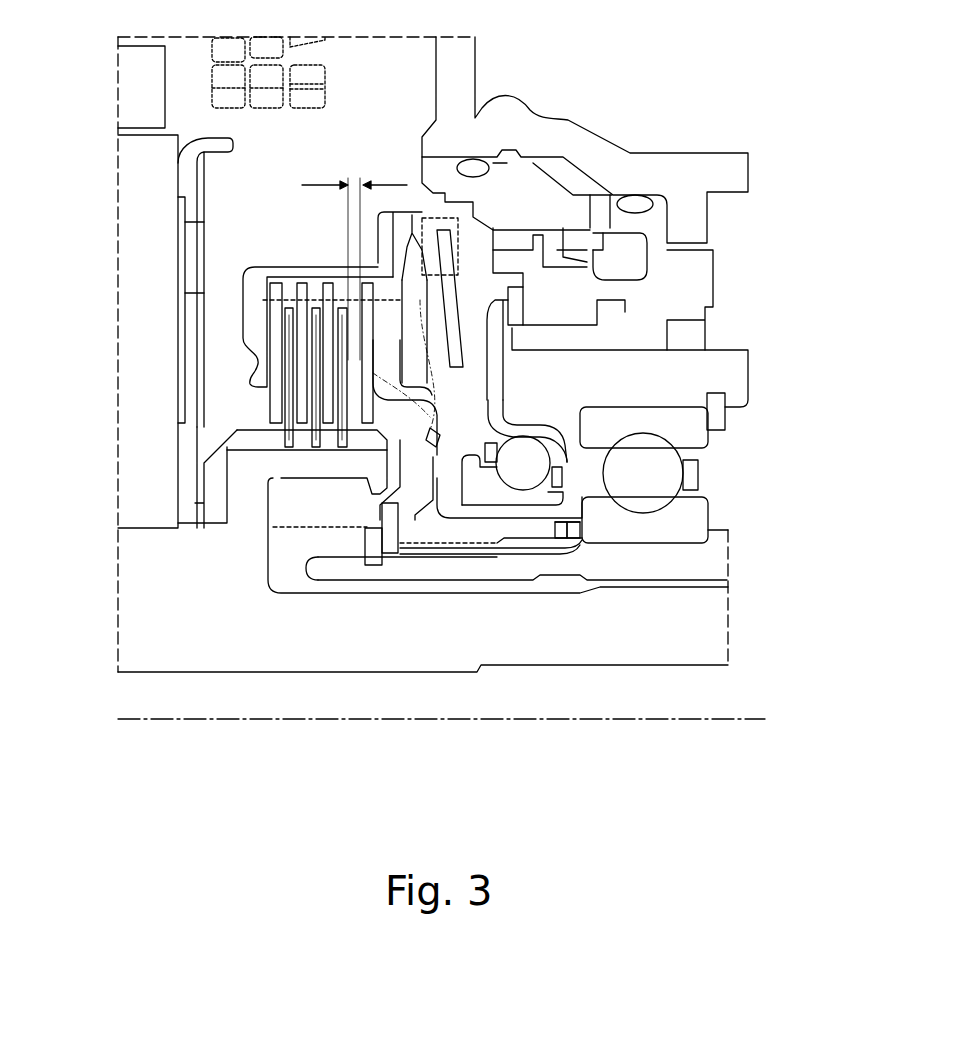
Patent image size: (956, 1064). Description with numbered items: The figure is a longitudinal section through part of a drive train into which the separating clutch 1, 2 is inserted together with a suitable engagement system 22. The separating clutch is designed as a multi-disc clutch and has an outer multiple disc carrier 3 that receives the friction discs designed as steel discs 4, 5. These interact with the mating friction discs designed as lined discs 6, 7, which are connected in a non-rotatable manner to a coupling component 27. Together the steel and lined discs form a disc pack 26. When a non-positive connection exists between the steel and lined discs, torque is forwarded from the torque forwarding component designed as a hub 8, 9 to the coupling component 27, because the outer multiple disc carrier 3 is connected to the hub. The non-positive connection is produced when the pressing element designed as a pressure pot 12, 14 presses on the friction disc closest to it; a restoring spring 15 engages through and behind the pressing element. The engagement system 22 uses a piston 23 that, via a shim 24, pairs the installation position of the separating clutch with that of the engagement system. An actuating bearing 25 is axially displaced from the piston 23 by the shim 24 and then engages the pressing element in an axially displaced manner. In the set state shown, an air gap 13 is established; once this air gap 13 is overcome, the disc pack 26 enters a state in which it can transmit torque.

The clutch / brake 1, 2 is at (273, 258).
The outer multiple disc carrier 3 is at (318, 273).
The inner plate carrier / inner plates 4, 5 is at (292, 433).
The outer plates 6, 7 is at (338, 430).
The shaft 8, 9 is at (483, 525).
The piston 12, 14 is at (447, 460).
The air gap 13 is at (395, 185).
The restoring spring 15 is at (443, 228).
The engagement system 22 is at (592, 250).
The piston 23 is at (588, 276).
The shim 24 is at (512, 293).
The actuating bearing 25 is at (522, 513).
The disc pack 26 is at (320, 528).
The coupling component 27 is at (242, 482).